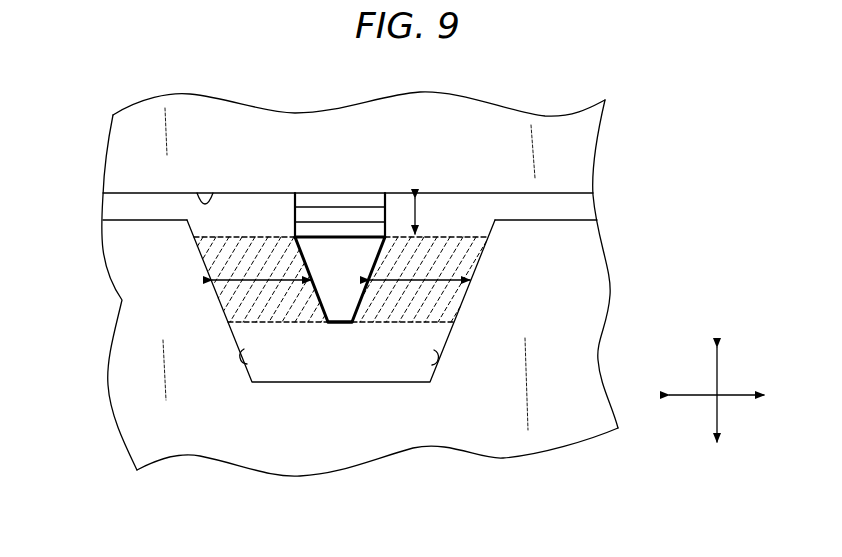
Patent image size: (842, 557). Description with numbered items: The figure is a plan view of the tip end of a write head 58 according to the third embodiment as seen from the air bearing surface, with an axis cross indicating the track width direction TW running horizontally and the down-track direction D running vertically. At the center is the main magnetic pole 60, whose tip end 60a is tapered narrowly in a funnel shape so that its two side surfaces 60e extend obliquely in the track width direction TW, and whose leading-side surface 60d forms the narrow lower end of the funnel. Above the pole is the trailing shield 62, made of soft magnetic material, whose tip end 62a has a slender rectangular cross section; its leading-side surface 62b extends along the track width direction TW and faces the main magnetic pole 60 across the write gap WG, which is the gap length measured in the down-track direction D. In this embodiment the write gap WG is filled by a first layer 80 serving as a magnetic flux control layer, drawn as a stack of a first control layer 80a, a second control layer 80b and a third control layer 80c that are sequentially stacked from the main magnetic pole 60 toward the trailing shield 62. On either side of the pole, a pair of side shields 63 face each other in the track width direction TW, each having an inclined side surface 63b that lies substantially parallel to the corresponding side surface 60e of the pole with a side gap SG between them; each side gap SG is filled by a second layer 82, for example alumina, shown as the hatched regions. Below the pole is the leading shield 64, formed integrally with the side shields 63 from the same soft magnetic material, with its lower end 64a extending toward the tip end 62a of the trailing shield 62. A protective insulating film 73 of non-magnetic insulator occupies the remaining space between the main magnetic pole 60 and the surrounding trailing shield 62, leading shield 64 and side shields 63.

The write head 58 is at (110, 428).
The main magnetic pole 60 is at (342, 335).
The tip end of the main magnetic pole 60a is at (317, 298).
The leading-side surface 60d is at (340, 325).
The side surfaces of the main magnetic pole 60e is at (316, 310).
The trailing shield 62 is at (354, 135).
The tip end of the trailing shield 62a is at (262, 130).
The leading-side surface of the trailing shield tip end 62b is at (197, 193).
The side shield 63 is at (357, 331).
The side surface of the side shield 63b is at (244, 368).
The leading shield 64 is at (357, 365).
The lower end of the leading shield 64a is at (328, 458).
The protective insulating film 73 is at (588, 207).
The first layer 80 is at (347, 176).
The first control layer 80a is at (308, 201).
The second control layer 80b is at (343, 216).
The third control layer 80c is at (287, 150).
The second layer 82 is at (197, 254).
The side gap SG is at (258, 282).
The write gap WG is at (434, 216).
The track width direction TW is at (699, 396).
The down-track direction D is at (716, 408).